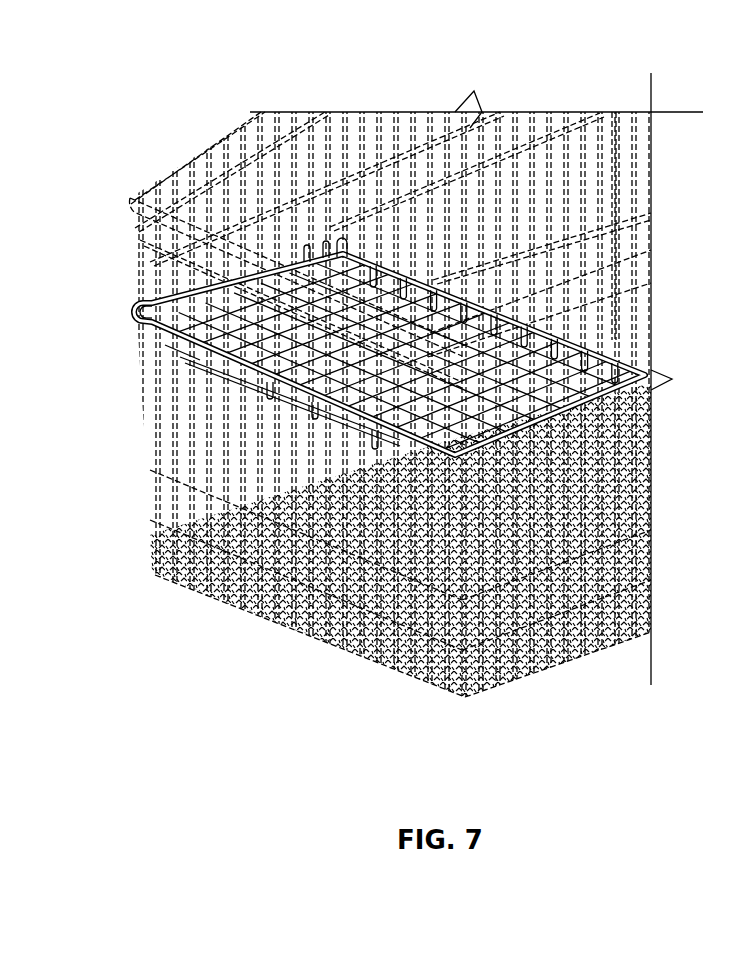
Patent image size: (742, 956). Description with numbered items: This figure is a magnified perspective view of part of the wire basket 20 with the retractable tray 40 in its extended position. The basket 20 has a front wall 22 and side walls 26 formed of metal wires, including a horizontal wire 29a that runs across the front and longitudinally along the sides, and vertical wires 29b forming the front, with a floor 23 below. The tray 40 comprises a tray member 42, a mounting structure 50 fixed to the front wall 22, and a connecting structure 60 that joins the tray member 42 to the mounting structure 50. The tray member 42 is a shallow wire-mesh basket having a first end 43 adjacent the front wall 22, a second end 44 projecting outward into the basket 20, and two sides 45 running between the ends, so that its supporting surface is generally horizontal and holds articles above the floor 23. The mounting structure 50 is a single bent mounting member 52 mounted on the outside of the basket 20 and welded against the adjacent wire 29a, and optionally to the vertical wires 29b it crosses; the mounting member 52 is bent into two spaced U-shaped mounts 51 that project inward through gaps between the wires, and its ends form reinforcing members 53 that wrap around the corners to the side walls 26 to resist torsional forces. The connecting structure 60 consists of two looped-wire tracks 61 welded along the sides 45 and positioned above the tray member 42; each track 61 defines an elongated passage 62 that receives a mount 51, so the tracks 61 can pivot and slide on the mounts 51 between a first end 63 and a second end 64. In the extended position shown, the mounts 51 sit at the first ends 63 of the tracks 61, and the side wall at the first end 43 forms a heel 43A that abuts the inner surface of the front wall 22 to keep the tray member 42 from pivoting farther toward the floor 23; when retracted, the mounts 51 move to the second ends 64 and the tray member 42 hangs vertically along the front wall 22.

The basket 20 is at (536, 703).
The front wall 22 is at (313, 573).
The floor 23 is at (586, 646).
The side walls 26 is at (518, 205).
The horizontal wire 29a is at (363, 222).
The vertical wires 29b is at (243, 572).
The retractable tray 40 is at (386, 452).
The tray member 42 is at (409, 281).
The first end 43 is at (385, 452).
The heel 43A is at (305, 418).
The second end 44 is at (440, 285).
The sides 45 is at (253, 288).
The mounting structure 50 is at (251, 385).
The mounts 51 is at (160, 330).
The mounting member 52 is at (203, 363).
The reinforcing members 53 is at (138, 312).
The connecting structure 60 is at (609, 352).
The tracks 61 is at (307, 250).
The passage 62 is at (326, 252).
The first end 63 is at (147, 308).
The second end 64 is at (347, 238).